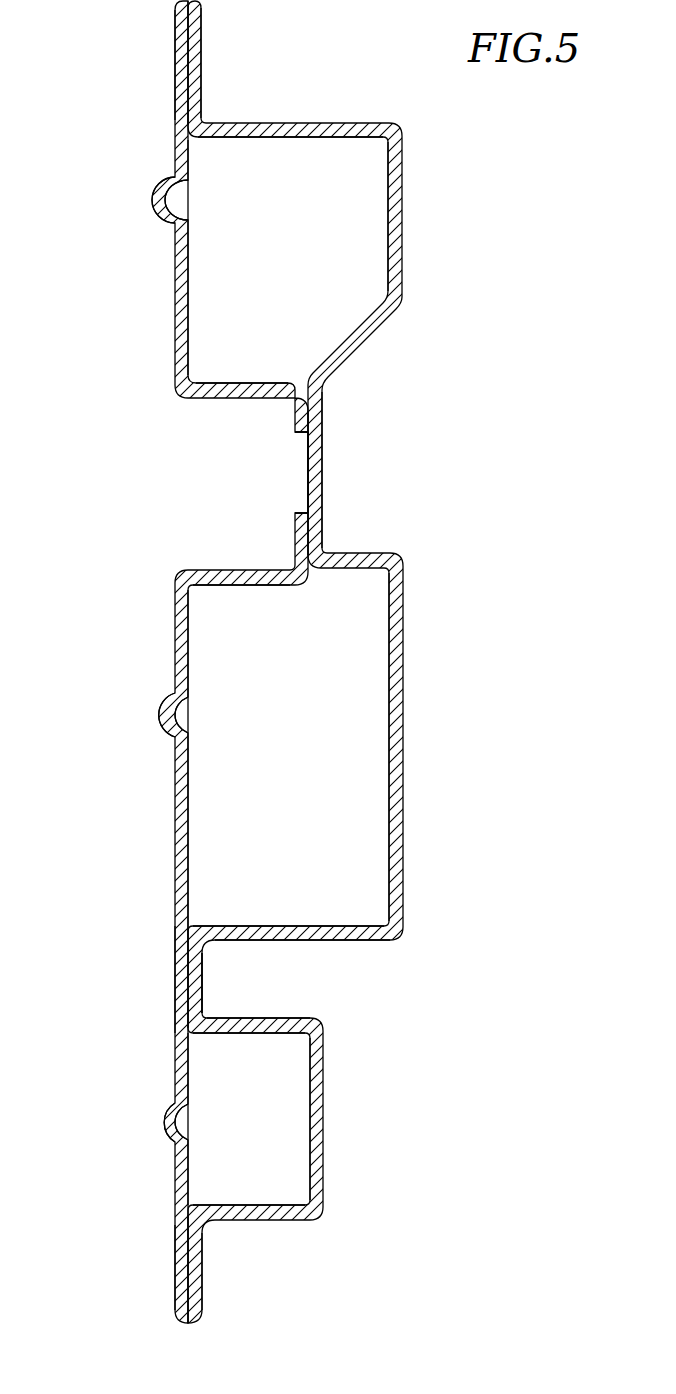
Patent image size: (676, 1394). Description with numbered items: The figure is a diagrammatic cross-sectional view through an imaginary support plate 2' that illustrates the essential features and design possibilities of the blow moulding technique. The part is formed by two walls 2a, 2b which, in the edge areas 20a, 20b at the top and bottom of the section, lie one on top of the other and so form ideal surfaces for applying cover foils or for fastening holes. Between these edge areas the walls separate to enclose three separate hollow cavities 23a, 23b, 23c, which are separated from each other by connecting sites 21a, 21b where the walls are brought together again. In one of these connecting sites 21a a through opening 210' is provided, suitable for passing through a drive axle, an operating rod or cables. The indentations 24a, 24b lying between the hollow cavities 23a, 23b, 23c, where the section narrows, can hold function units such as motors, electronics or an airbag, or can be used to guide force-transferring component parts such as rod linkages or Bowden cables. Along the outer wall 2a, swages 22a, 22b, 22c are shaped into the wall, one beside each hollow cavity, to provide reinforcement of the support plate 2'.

The support plate 2' is at (294, 662).
The wall 2a is at (160, 632).
The wall 2b is at (418, 605).
The edge area 20a is at (186, 33).
The edge area 20b is at (190, 1252).
The connecting site 21a is at (293, 533).
The connecting site 21b is at (190, 980).
The swage 22a is at (156, 200).
The swage 22b is at (165, 705).
The swage 22c is at (165, 1128).
The hollow cavity 23a is at (300, 243).
The hollow cavity 23b is at (330, 840).
The hollow cavity 23c is at (258, 1118).
The indentation 24a is at (365, 503).
The indentation 24b is at (252, 975).
The through opening 210' is at (433, 470).